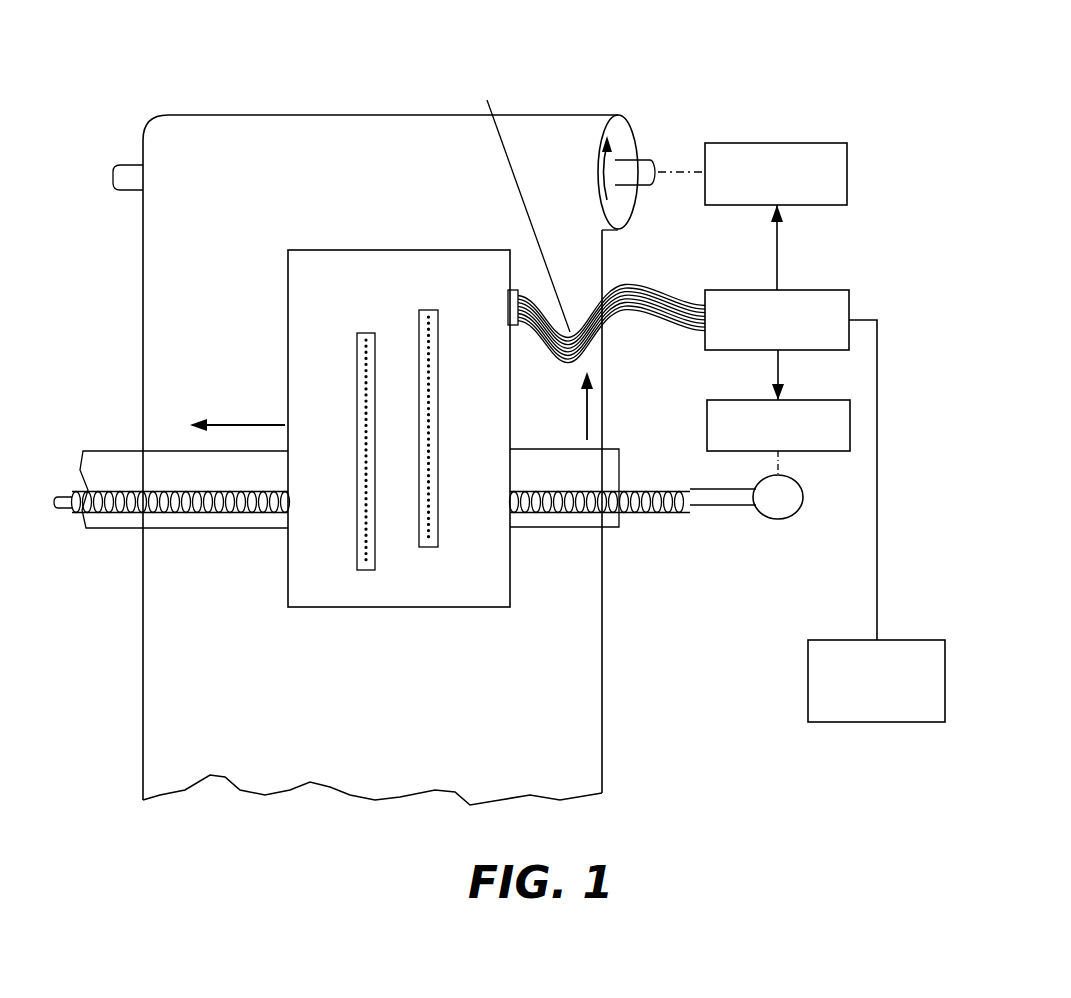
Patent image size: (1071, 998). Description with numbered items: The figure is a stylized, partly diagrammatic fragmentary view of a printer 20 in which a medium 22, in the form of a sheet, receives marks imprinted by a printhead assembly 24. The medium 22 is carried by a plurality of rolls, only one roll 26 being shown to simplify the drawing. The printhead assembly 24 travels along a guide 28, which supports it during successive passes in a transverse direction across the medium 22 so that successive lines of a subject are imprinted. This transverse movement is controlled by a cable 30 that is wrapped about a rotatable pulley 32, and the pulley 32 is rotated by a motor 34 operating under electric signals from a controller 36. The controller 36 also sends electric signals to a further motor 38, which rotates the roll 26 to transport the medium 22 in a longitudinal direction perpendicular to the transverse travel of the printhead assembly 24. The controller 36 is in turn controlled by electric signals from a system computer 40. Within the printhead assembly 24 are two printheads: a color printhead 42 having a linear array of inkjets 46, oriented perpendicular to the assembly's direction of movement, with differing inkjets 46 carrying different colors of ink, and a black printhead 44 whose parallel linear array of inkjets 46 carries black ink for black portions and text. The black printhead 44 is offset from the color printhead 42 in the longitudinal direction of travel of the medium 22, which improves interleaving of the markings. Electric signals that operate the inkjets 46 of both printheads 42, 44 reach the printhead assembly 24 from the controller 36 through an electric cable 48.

The printer 20 is at (130, 253).
The medium 22 is at (230, 765).
The printhead assembly 24 is at (319, 257).
The roll 26 is at (625, 142).
The guide 28 is at (115, 528).
The cable 30 is at (707, 508).
The pulley 32 is at (782, 520).
The motor 34 is at (820, 451).
The controller 36 is at (697, 355).
The further motor 38 is at (735, 206).
The system computer 40 is at (870, 722).
The color printhead 42 is at (365, 571).
The black printhead 44 is at (428, 548).
The inkjets 46 is at (428, 420).
The electric cable 48 is at (640, 293).